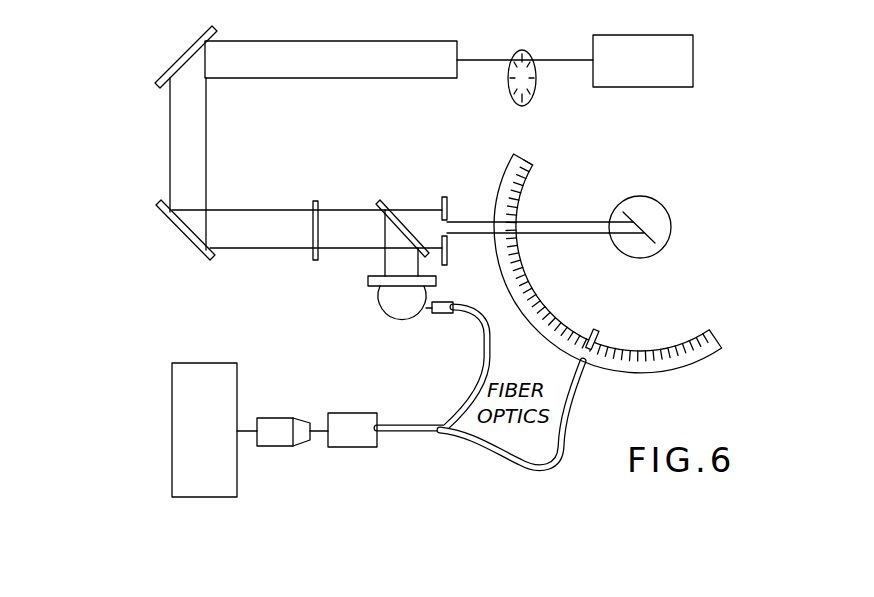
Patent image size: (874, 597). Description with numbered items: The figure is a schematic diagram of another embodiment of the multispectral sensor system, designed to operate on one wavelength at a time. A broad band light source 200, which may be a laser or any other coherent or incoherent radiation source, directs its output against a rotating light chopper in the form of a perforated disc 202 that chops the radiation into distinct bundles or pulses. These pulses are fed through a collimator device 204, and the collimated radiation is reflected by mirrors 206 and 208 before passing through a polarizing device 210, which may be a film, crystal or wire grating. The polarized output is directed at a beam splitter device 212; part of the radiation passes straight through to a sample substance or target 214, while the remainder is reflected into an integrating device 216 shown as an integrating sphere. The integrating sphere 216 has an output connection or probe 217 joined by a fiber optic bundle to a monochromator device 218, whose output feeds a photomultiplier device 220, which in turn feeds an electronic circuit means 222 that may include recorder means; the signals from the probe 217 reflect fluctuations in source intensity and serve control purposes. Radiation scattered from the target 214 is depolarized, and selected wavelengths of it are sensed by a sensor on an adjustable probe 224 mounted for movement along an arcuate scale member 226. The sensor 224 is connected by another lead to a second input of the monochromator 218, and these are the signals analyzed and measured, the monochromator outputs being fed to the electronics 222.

The broad band light source 200 is at (655, 88).
The perforated disc 202 is at (534, 88).
The collimator device 204 is at (310, 79).
The mirror 206 is at (186, 54).
The mirror 208 is at (178, 227).
The polarizing device 210 is at (318, 204).
The beam splitter device 212 is at (402, 222).
The sample substance or target 214 is at (640, 222).
The integrating device 216 is at (380, 328).
The output connection or probe 217 is at (445, 302).
The monochromator device 218 is at (357, 447).
The photomultiplier device 220 is at (267, 447).
The electronic circuit means 222 is at (175, 388).
The adjustable probe 224 is at (592, 331).
The arcuate scale member 226 is at (538, 302).